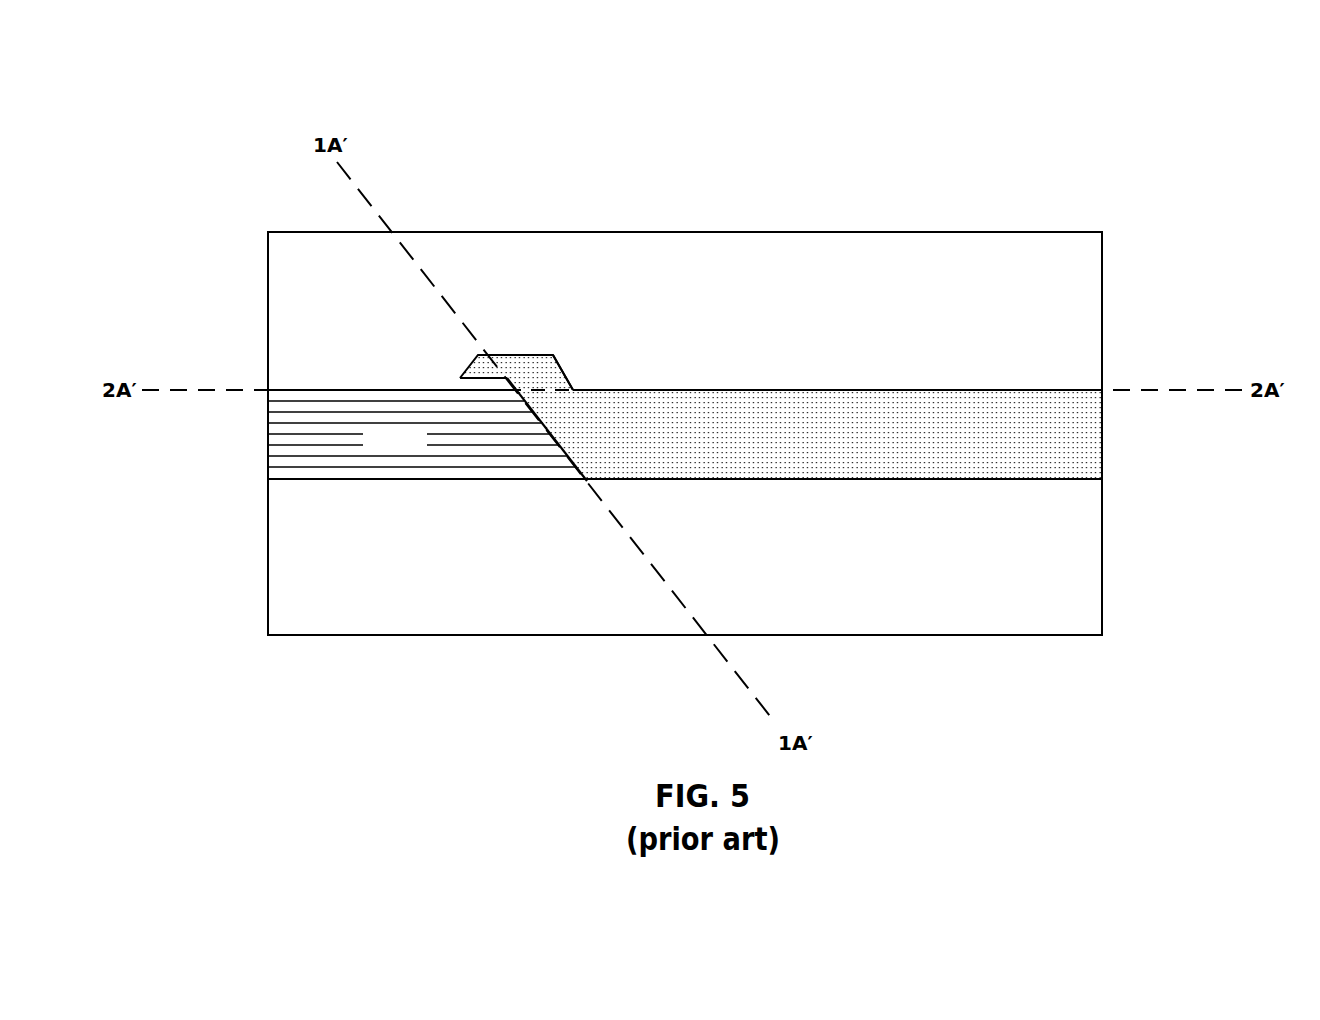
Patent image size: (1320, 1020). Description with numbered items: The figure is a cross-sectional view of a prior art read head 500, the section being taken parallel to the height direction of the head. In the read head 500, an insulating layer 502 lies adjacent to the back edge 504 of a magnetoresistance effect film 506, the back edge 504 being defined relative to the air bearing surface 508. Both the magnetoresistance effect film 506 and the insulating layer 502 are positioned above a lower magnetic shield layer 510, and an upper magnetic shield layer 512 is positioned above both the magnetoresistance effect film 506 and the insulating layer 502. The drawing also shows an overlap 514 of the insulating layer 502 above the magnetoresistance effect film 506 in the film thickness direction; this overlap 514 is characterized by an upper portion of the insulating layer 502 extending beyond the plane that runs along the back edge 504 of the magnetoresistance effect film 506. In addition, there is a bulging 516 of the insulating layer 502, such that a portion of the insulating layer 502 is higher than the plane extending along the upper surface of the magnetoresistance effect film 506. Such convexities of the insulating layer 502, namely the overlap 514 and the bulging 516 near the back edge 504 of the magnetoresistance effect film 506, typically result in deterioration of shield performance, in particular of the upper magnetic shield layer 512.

The read head 500 is at (788, 136).
The insulating layer 502 is at (781, 417).
The back edge 504 is at (560, 458).
The magnetoresistance effect film 506 is at (426, 434).
The air bearing surface 508 is at (264, 527).
The lower magnetic shield layer 510 is at (685, 557).
The upper magnetic shield layer 512 is at (685, 311).
The overlap 514 is at (457, 364).
The bulging 516 is at (573, 365).